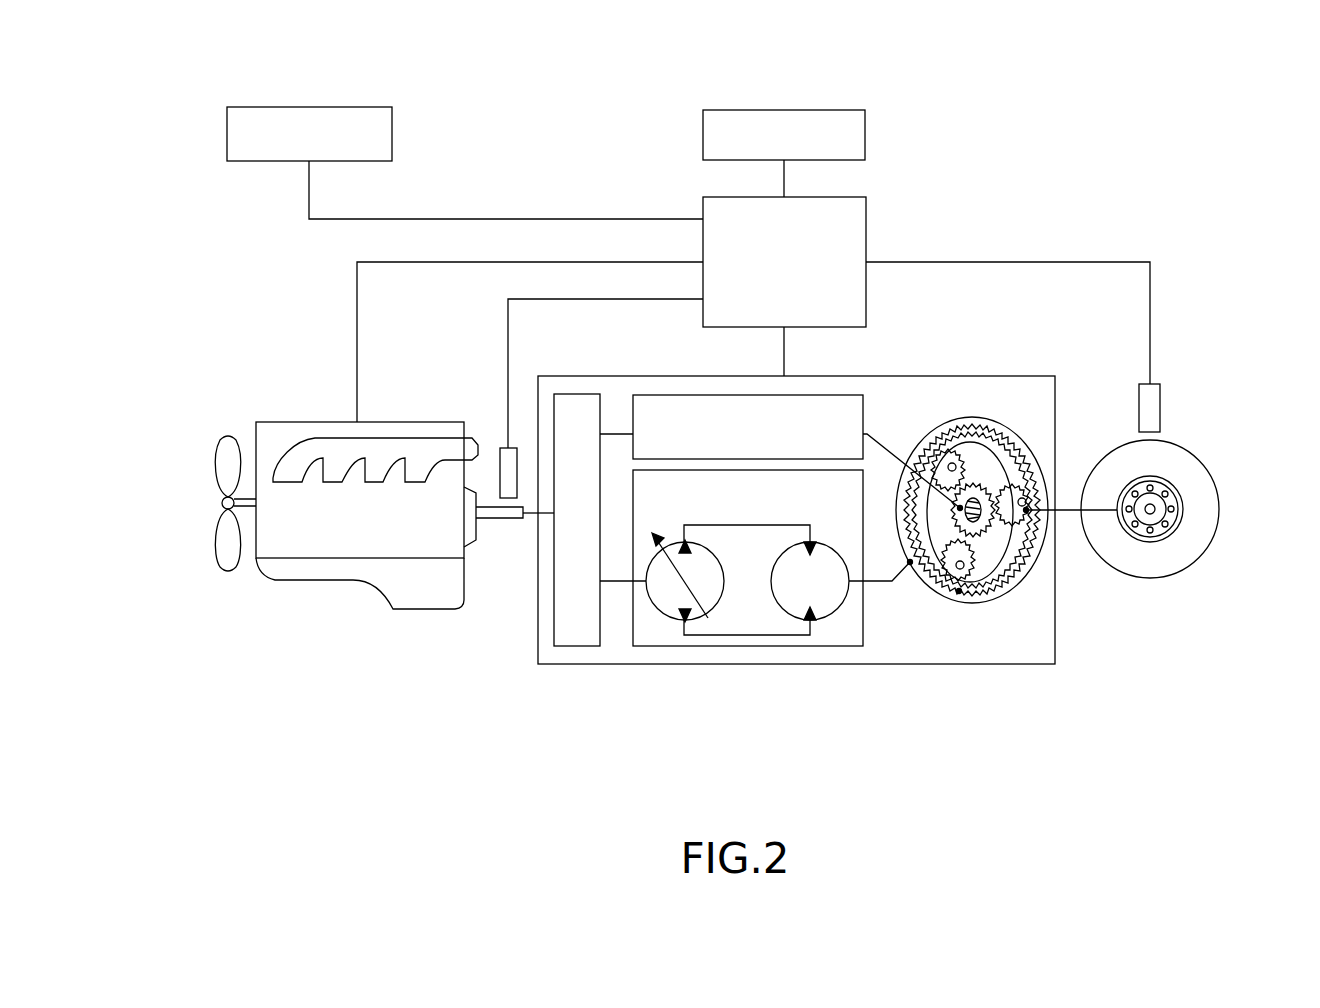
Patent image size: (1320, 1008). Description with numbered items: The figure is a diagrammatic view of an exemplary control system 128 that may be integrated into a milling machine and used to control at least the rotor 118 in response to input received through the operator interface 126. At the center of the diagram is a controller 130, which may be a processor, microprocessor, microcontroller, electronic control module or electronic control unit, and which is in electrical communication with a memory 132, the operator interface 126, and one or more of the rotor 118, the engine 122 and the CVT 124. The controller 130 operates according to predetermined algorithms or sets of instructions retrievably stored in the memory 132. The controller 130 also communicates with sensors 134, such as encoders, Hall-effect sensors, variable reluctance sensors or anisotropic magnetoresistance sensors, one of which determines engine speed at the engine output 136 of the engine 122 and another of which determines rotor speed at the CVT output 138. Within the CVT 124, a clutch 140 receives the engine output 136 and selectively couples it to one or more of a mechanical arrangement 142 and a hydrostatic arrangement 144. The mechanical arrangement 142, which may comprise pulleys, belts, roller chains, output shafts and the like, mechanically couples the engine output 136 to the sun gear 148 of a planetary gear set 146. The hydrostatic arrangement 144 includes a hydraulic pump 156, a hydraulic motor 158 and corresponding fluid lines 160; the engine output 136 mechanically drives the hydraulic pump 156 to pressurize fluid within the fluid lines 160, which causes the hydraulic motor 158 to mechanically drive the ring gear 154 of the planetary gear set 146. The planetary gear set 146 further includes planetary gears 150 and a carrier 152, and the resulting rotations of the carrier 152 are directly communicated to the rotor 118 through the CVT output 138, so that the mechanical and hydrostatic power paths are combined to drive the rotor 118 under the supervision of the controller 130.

The rotor 118 is at (1210, 545).
The engine 122 is at (322, 422).
The CVT 124 is at (633, 376).
The operator interface 126 is at (314, 107).
The control system 128 is at (1048, 155).
The controller 130 is at (867, 217).
The memory 132 is at (788, 110).
The sensors 134 is at (500, 460).
The engine output 136 is at (502, 517).
The CVT output 138 is at (1062, 508).
The clutch 140 is at (540, 627).
The mechanical arrangement 142 is at (724, 394).
The hydrostatic arrangement 144 is at (860, 648).
The planetary gear set 146 is at (977, 404).
The sun gear 148 is at (977, 527).
The planetary gears 150 is at (1025, 510).
The carrier 152 is at (1023, 527).
The ring gear 154 is at (921, 573).
The hydraulic pump 156 is at (651, 617).
The hydraulic motor 158 is at (822, 620).
The fluid lines 160 is at (748, 527).